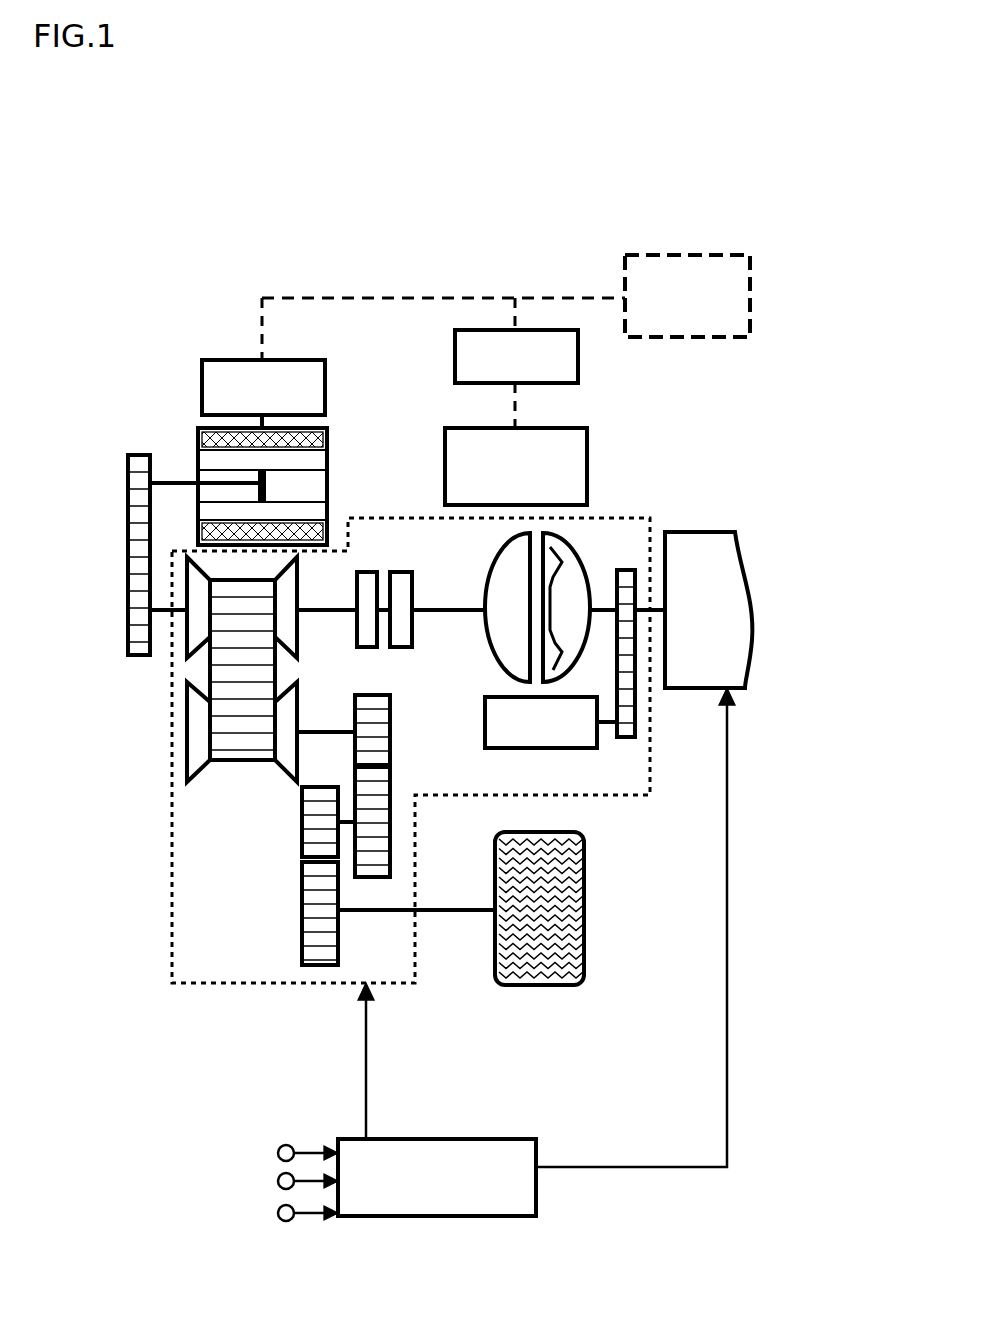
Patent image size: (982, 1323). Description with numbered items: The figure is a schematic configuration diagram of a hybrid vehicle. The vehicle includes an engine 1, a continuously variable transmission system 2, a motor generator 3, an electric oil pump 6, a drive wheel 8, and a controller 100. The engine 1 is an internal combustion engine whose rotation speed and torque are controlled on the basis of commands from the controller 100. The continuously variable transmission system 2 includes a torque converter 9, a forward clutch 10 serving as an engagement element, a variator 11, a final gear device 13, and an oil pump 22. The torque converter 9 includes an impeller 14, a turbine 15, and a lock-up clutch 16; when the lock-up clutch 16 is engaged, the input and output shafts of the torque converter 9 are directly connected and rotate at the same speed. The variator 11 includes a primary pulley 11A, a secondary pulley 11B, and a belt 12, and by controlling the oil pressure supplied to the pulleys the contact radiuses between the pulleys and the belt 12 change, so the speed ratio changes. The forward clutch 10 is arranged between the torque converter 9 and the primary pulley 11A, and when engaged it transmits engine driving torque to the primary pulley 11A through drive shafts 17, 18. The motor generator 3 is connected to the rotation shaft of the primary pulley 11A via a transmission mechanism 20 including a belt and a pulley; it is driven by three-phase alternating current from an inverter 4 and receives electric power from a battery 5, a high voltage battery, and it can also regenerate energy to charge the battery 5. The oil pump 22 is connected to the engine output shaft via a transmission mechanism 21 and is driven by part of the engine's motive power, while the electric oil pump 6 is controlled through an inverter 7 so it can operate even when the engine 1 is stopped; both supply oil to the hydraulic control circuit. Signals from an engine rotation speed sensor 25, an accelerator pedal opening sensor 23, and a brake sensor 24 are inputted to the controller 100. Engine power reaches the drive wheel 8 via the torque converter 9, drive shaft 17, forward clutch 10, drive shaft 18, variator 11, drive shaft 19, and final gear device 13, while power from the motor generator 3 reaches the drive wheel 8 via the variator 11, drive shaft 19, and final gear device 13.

The engine 1 is at (713, 530).
The continuously variable transmission system 2 is at (200, 1012).
The motor generator 3 is at (198, 443).
The inverter 4 is at (202, 375).
The battery 5 is at (683, 255).
The electric oil pump 6 is at (587, 448).
The inverter 7 is at (578, 367).
The drive wheel 8 is at (584, 843).
The torque converter 9 is at (559, 575).
The forward clutch 10 is at (385, 564).
The variator 11 is at (200, 711).
The primary pulley 11A is at (193, 633).
The secondary pulley 11B is at (187, 763).
The belt 12 is at (247, 747).
The final gear device 13 is at (291, 865).
The impeller 14 is at (585, 588).
The turbine 15 is at (500, 572).
The lock-up clutch 16 is at (587, 588).
The drive shaft 17 is at (435, 612).
The drive shaft 18 is at (325, 612).
The drive shaft 19 is at (322, 731).
The transmission mechanism 20 is at (128, 525).
The transmission mechanism 21 is at (635, 695).
The oil pump 22 is at (590, 742).
The accelerator pedal opening sensor 23 is at (278, 1153).
The brake sensor 24 is at (278, 1181).
The engine rotation speed sensor 25 is at (278, 1213).
The controller 100 is at (512, 1139).